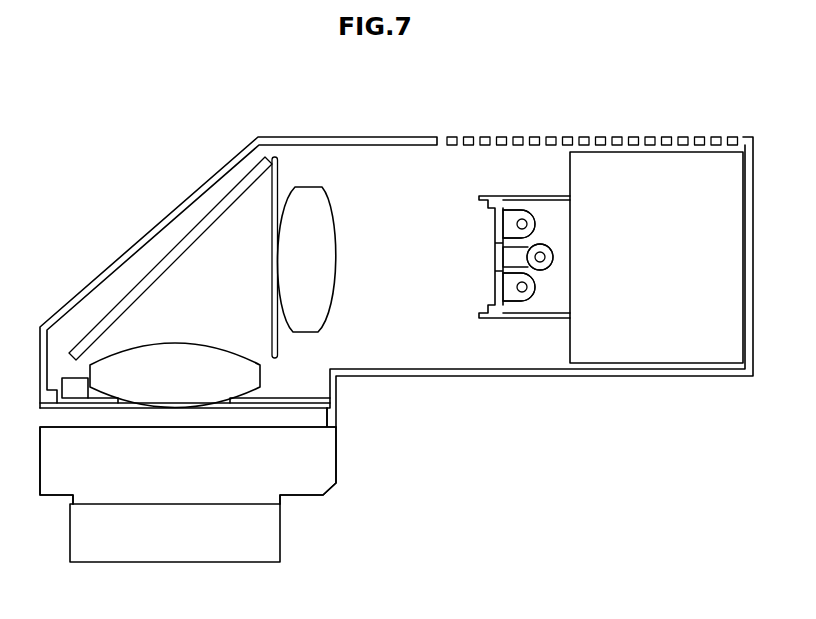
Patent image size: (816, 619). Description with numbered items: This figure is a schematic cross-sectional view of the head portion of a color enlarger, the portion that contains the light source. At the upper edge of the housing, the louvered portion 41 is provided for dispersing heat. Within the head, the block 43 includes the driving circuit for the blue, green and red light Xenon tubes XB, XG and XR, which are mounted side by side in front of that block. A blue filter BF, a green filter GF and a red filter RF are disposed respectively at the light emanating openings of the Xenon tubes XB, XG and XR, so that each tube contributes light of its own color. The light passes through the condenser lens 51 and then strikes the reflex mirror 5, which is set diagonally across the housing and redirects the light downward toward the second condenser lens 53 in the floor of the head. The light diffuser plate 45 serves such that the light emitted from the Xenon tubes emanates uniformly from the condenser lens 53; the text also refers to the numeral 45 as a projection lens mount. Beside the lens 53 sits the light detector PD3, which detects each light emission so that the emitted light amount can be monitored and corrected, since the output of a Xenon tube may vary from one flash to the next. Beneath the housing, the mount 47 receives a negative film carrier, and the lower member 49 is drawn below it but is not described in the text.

The reflex mirror 5 is at (177, 243).
The louvered portion 41 is at (568, 136).
The block 43 is at (623, 353).
The light diffuser plate 45 is at (278, 167).
The mount 47 is at (313, 417).
The base connector 49 is at (265, 535).
The condenser lens 51 is at (320, 310).
The condenser lens 53 is at (243, 378).
The light detector PD3 is at (70, 384).
The blue filter BF is at (498, 222).
The green filter GF is at (498, 256).
The red filter RF is at (498, 289).
The blue light Xenon tube XB is at (519, 209).
The green light Xenon tube XG is at (553, 257).
The red light Xenon tube XR is at (537, 290).